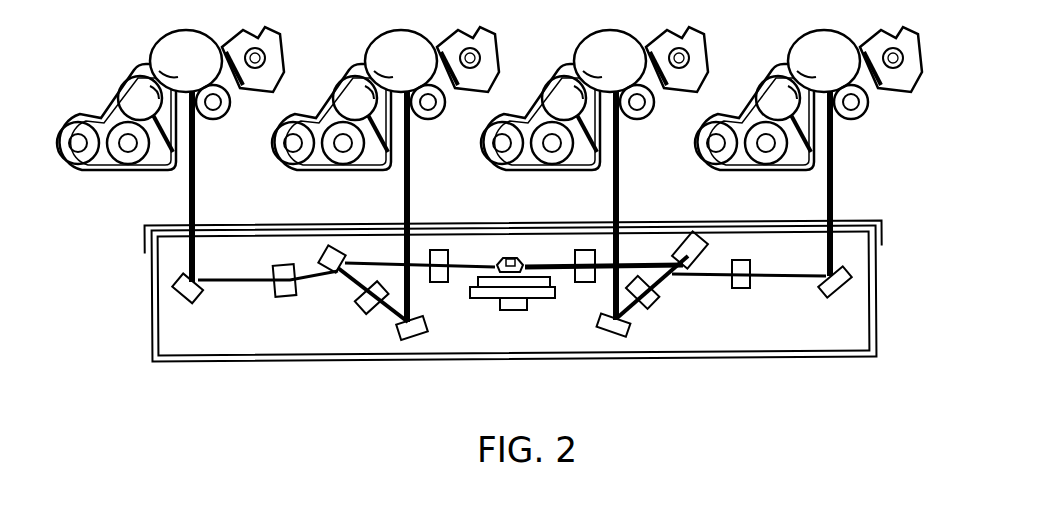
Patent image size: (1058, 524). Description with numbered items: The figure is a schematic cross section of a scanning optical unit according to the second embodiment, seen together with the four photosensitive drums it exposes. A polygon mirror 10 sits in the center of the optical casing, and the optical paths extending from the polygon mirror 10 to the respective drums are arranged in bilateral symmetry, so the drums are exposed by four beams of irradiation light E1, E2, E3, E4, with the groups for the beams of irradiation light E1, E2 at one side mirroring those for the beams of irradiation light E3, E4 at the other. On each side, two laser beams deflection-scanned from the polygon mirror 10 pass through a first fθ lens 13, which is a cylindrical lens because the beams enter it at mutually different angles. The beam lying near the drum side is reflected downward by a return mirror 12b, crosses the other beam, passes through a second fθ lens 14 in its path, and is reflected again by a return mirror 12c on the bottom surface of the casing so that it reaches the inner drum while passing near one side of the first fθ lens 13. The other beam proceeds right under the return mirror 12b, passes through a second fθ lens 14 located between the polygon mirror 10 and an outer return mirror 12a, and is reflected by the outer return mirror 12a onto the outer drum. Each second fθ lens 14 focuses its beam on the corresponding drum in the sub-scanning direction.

The beam of irradiation light E1 is at (838, 172).
The beam of irradiation light E2 is at (621, 191).
The beam of irradiation light E3 is at (411, 191).
The beam of irradiation light E4 is at (198, 191).
The polygon mirror 10 is at (520, 268).
The outer return mirror 12a is at (847, 283).
The return mirror 12b is at (697, 237).
The return mirror 12c is at (630, 330).
The first fθ lens 13 is at (580, 250).
The second fθ lens 14 is at (657, 300).